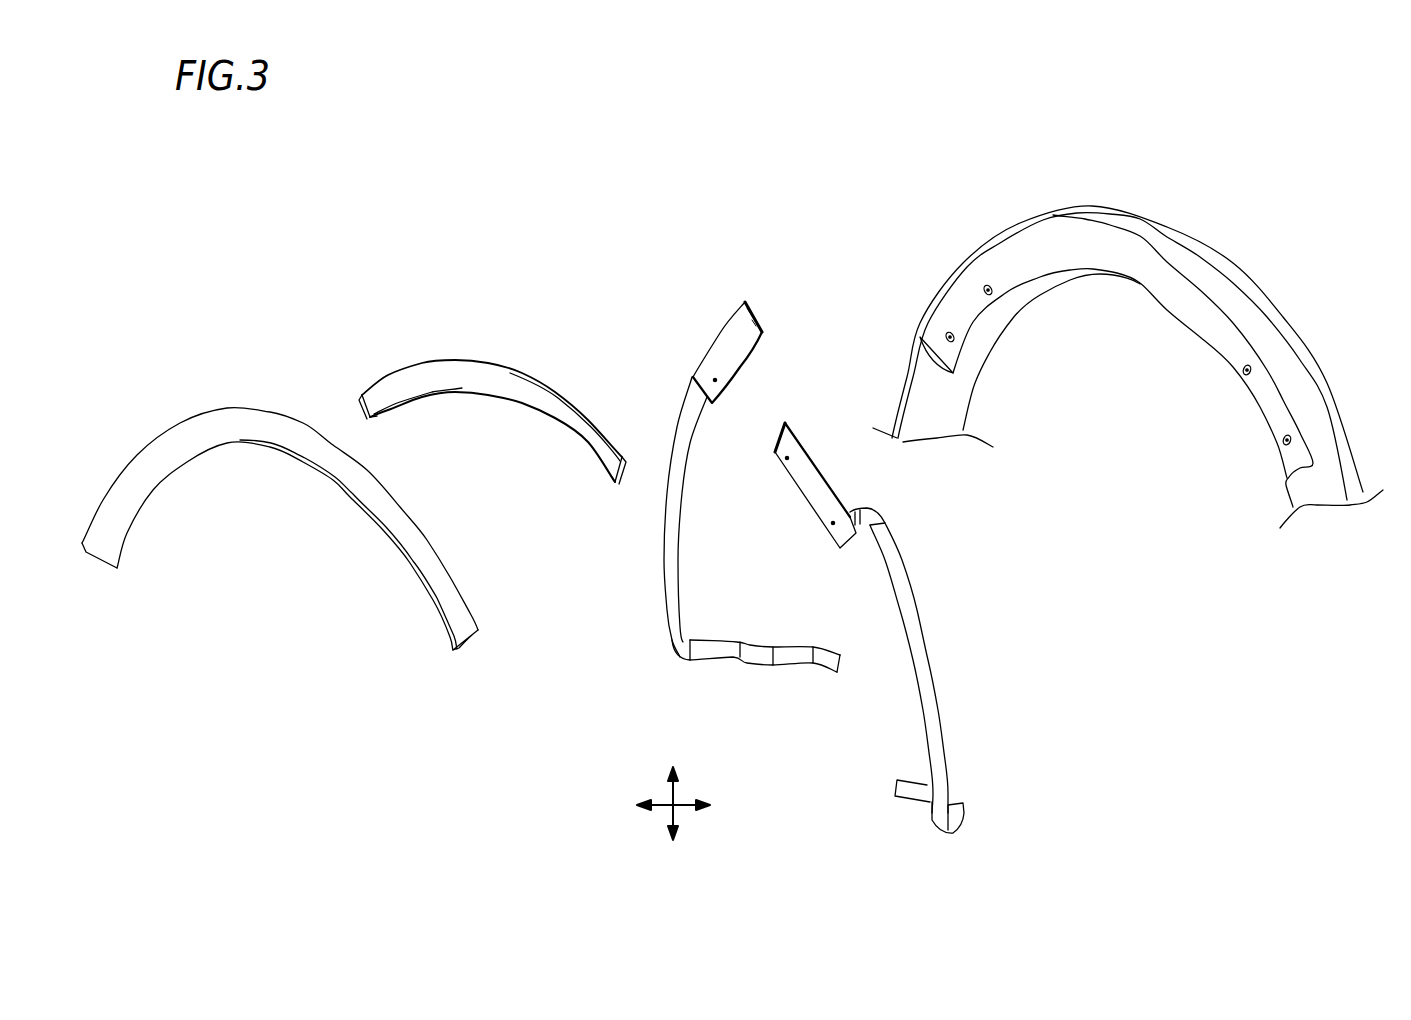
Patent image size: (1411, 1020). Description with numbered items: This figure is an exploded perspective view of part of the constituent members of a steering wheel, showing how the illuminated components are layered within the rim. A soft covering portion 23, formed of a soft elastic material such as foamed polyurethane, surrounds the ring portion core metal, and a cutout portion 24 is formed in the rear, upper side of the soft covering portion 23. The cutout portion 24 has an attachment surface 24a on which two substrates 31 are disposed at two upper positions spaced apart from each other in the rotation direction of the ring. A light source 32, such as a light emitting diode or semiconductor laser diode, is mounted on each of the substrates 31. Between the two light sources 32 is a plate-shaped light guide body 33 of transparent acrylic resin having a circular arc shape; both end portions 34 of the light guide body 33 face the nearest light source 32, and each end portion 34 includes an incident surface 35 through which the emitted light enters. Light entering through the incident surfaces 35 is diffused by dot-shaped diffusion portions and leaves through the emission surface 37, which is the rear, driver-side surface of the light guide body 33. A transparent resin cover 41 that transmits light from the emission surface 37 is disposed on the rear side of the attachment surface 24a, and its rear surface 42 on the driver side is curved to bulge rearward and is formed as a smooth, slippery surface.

The soft covering portion 23 is at (1319, 395).
The cutout portion 24 is at (1128, 361).
The attachment surface 24a is at (1103, 268).
The substrate 31 is at (723, 334).
The light source 32 is at (747, 305).
The light guide body 33 is at (864, 538).
The end portion 34 is at (388, 410).
The incident surface 35 is at (362, 407).
The emission surface 37 is at (477, 385).
The cover 41 is at (280, 528).
The rear surface 42 is at (236, 447).